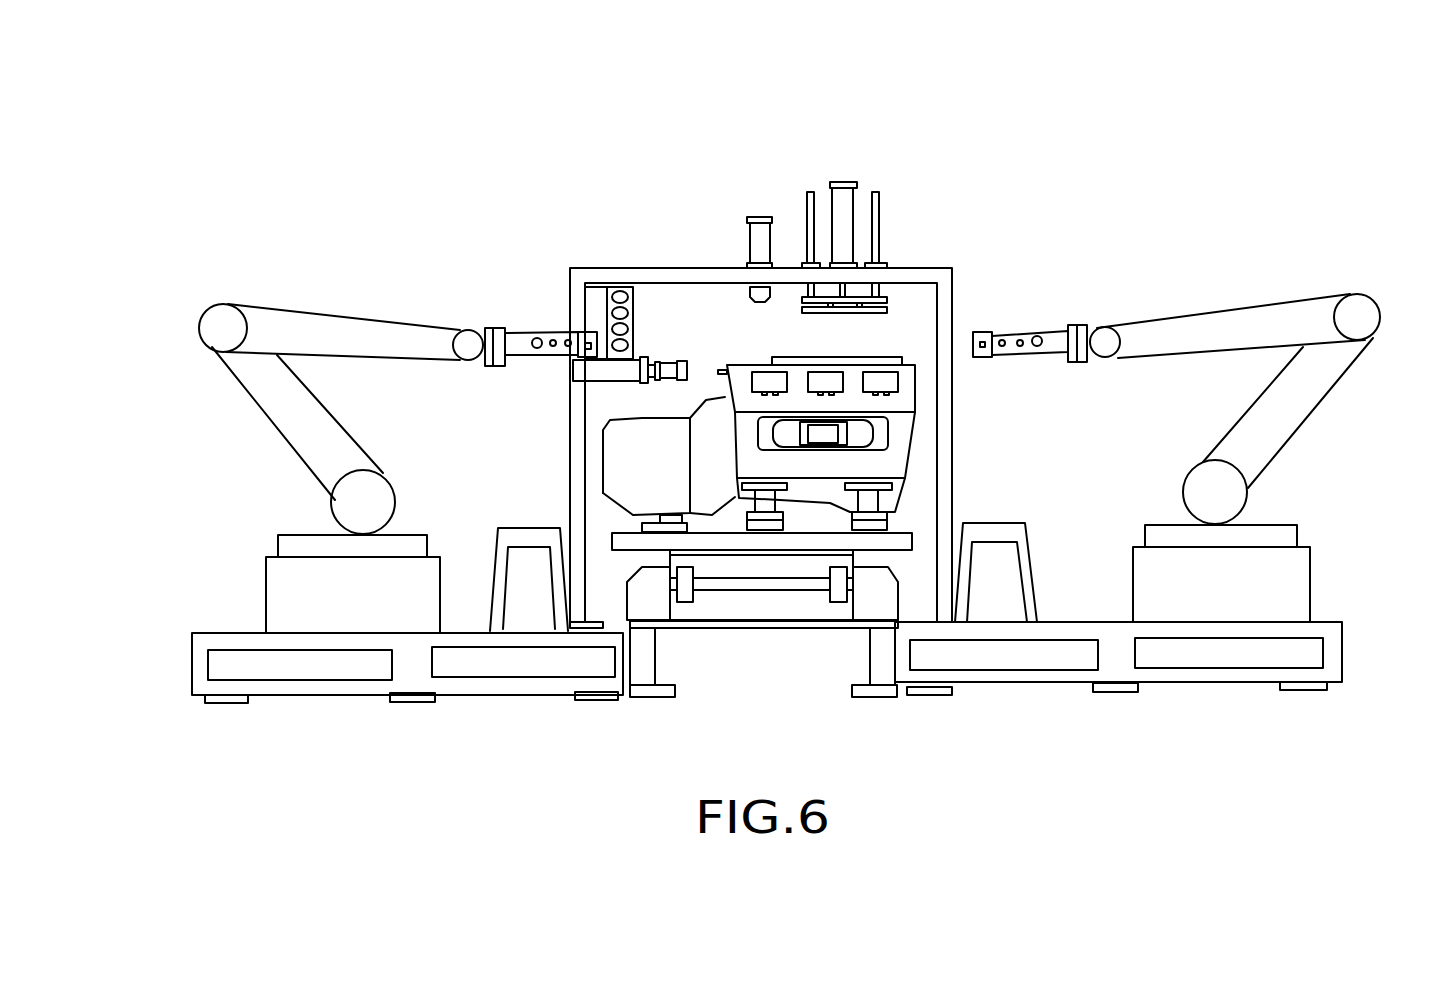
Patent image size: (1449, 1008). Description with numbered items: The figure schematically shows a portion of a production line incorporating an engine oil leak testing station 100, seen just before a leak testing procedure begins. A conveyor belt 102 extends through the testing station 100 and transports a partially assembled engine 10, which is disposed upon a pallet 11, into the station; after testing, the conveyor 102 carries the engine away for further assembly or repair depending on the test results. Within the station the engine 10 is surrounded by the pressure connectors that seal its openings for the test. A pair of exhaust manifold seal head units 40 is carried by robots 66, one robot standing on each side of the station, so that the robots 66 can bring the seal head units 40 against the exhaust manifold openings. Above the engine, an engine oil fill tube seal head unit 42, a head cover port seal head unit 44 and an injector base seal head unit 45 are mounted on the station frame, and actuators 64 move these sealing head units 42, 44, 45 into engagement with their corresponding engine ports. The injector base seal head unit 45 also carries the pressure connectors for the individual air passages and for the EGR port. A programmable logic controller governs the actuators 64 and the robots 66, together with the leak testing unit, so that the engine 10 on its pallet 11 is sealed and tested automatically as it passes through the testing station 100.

The engine oil leak testing station 100 is at (395, 198).
The partially assembled engine 10 is at (917, 468).
The pallet 11 is at (900, 543).
The conveyor belt 102 is at (760, 550).
The exhaust manifold seal head unit 40 is at (562, 330).
The engine oil fill tube seal head unit 42 is at (740, 262).
The head cover port seal head unit 44 is at (668, 345).
The injector base seal head unit 45 is at (897, 303).
The actuator 64 is at (846, 181).
The robot 66 is at (280, 450).